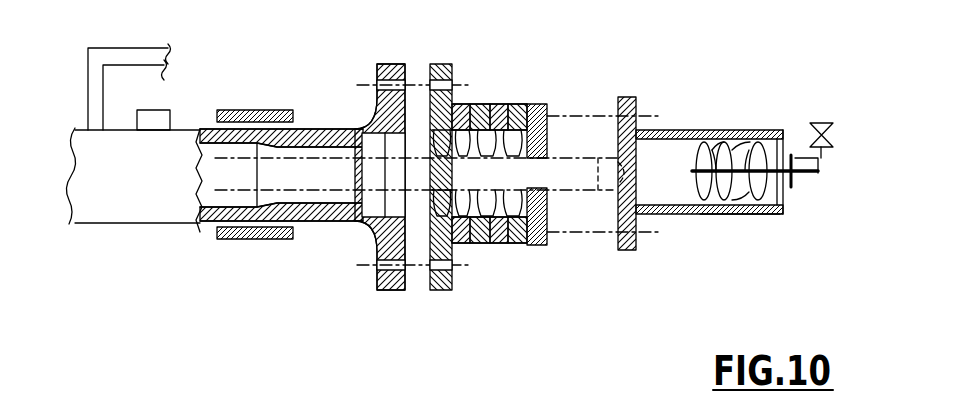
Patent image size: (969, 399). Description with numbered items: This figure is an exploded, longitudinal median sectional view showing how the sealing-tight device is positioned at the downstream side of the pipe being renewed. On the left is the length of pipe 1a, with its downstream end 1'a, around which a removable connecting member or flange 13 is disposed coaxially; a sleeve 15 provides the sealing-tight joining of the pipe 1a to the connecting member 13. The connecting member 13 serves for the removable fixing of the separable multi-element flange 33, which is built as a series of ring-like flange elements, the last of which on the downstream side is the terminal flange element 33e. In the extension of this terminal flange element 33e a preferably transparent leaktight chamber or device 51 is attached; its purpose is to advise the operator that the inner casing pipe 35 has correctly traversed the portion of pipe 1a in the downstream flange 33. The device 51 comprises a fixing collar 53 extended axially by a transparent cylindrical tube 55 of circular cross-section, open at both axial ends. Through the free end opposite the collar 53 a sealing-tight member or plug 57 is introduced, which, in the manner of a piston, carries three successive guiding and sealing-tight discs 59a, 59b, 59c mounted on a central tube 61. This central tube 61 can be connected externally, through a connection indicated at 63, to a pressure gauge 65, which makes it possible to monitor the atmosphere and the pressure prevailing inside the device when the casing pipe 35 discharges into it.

The length of pipe 1a is at (120, 202).
The downstream end 1'a is at (271, 219).
The connecting member 13 is at (337, 125).
The sleeve 15 is at (258, 108).
The separable multi-element flange 33 is at (513, 145).
The terminal flange element 33e is at (548, 106).
The casing pipe 35 is at (568, 178).
The leaktight chamber 51 is at (700, 128).
The fixing collar 53 is at (628, 252).
The transparent cylindrical tube 55 is at (735, 213).
The sealing-tight member 57 is at (749, 160).
The guiding and sealing-tight disc 59a is at (695, 200).
The guiding and sealing-tight disc 59b is at (727, 195).
The guiding and sealing-tight disc 59c is at (760, 192).
The central tube 61 is at (737, 160).
The rod 63 is at (823, 168).
The pressure gauge 65 is at (835, 133).